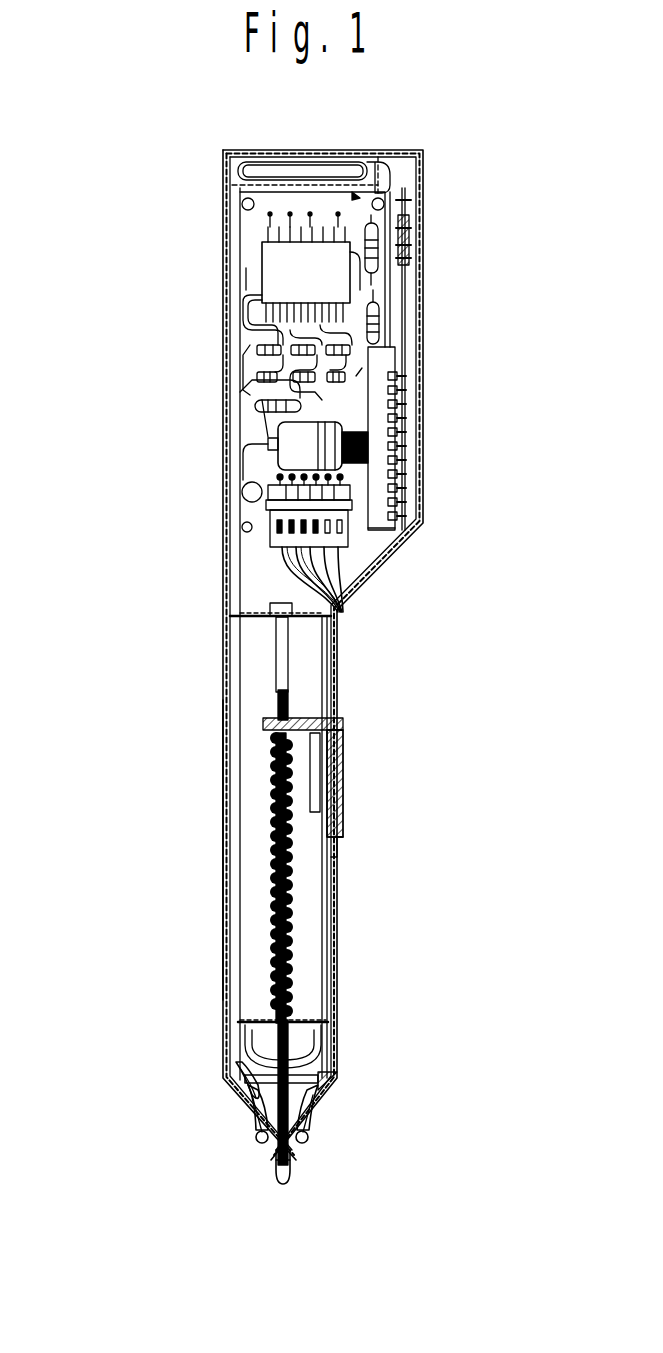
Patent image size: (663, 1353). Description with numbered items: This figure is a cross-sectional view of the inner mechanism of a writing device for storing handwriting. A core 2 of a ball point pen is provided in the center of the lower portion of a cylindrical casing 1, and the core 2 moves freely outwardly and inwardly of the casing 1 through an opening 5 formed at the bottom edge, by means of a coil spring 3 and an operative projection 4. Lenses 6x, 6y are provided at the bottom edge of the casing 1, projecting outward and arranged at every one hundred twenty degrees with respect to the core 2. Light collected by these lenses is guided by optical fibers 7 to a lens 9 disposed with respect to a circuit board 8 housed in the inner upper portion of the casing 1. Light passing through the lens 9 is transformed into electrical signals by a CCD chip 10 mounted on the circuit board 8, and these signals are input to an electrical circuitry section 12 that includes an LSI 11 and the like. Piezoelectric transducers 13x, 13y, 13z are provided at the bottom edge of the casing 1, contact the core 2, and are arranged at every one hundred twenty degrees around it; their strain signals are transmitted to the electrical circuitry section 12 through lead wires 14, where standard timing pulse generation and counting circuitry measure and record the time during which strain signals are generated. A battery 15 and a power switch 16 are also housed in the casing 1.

The cylindrical casing 1 is at (227, 600).
The core 2 is at (290, 1035).
The coil spring 3 is at (288, 858).
The operative projection 4 is at (338, 765).
The opening 5 is at (280, 1162).
The lens 6x is at (308, 1138).
The lens 6y is at (257, 1137).
The optical fibers 7 is at (238, 847).
The circuit board 8 is at (348, 388).
The lens 9 is at (293, 443).
The CCD chip 10 is at (378, 445).
The LSI 11 is at (278, 272).
The electrical circuitry section 12 is at (252, 228).
The piezoelectric transducer 13x is at (300, 1108).
The piezoelectric transducer 13y is at (247, 1123).
The piezoelectric transducer 13z is at (228, 1075).
The lead wires 14 is at (337, 1075).
The battery 15 is at (260, 170).
The power switch 16 is at (417, 220).